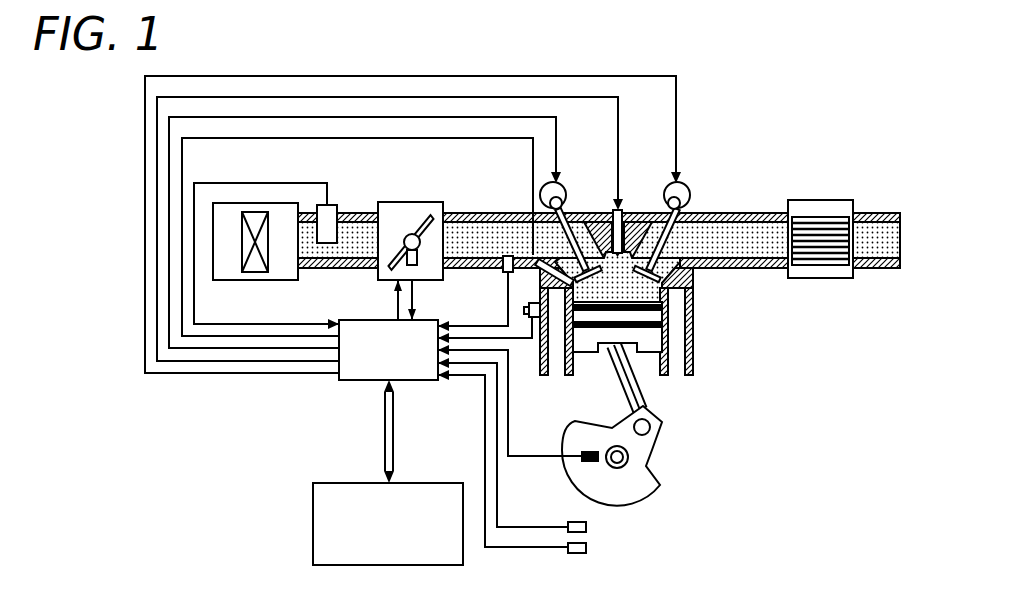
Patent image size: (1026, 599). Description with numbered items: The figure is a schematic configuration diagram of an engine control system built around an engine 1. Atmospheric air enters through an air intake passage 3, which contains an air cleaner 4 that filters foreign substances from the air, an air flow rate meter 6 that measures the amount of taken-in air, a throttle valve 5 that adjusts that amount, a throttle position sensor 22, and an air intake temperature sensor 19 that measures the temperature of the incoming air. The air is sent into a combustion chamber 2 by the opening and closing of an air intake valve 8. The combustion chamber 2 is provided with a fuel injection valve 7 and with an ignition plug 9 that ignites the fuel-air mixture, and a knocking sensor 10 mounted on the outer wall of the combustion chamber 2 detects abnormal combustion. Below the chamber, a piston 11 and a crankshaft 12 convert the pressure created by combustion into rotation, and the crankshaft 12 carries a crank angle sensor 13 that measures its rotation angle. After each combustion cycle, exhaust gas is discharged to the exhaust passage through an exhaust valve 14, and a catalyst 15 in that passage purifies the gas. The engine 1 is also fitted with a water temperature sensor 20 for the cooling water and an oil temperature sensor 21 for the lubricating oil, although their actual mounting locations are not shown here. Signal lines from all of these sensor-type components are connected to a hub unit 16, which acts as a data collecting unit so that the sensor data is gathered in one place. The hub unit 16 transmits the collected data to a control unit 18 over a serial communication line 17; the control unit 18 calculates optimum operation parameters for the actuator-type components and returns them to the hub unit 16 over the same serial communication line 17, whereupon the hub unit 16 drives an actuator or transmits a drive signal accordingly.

The engine 1 is at (651, 232).
The combustion chamber 2 is at (645, 280).
The air intake passage 3 is at (358, 250).
The air cleaner 4 is at (283, 281).
The throttle valve 5 is at (410, 232).
The air flow rate meter 6 is at (332, 208).
The fuel injection valve 7 is at (527, 251).
The air intake valve 8 is at (566, 186).
The ignition plug 9 is at (623, 208).
The knocking sensor 10 is at (524, 311).
The piston 11 is at (645, 335).
The crankshaft 12 is at (640, 480).
The crank angle sensor 13 is at (582, 452).
The exhaust valve 14 is at (690, 187).
The catalyst 15 is at (818, 212).
The hub unit 16 is at (354, 382).
The serial communication line 17 is at (396, 434).
The control unit 18 is at (322, 506).
The air intake temperature sensor 19 is at (506, 272).
The water temperature sensor 20 is at (587, 528).
The oil temperature sensor 21 is at (587, 550).
The throttle position sensor 22 is at (420, 265).